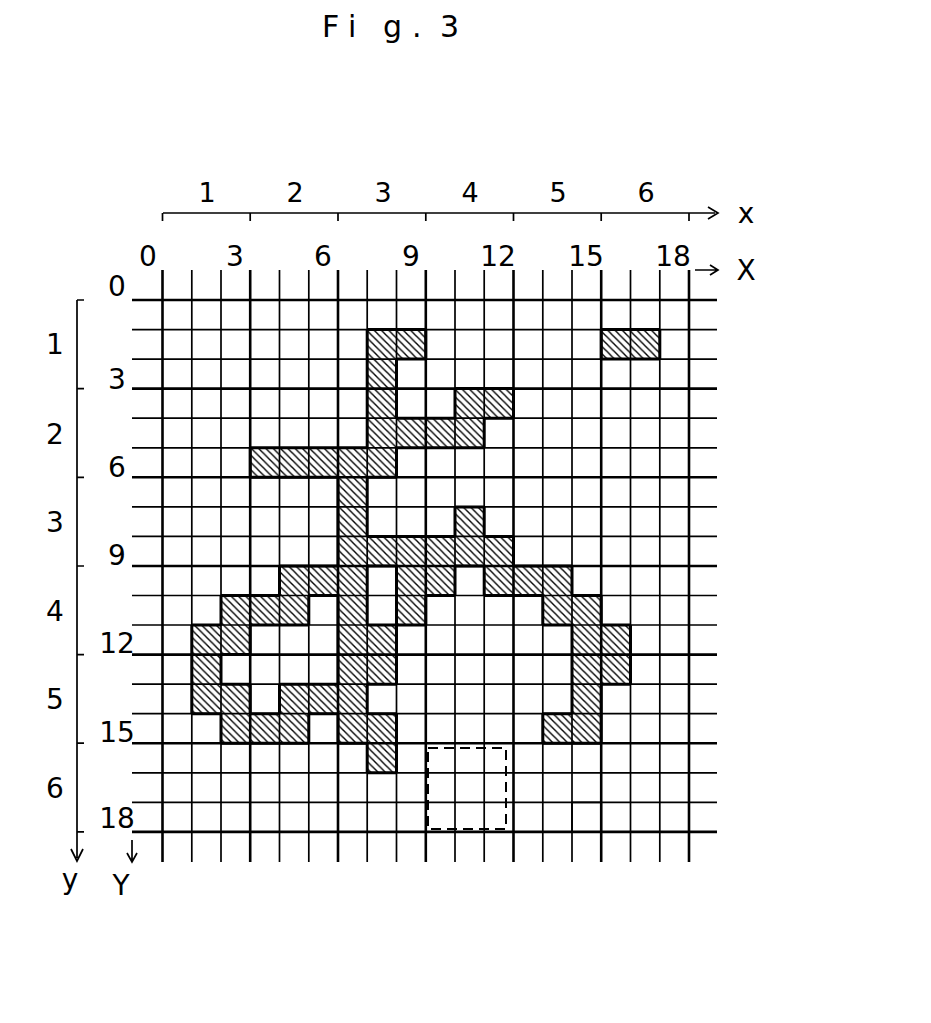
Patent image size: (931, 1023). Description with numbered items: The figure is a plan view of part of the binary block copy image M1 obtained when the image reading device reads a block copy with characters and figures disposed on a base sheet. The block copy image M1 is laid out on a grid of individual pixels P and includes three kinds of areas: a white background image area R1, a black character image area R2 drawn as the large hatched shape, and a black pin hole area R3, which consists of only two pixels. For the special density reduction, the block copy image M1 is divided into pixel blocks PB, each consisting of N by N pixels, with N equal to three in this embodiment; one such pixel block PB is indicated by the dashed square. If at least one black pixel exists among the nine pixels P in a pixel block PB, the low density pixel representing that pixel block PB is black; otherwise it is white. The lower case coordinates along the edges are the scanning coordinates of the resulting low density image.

The block copy image M1 is at (769, 488).
The white background image area R1 is at (672, 790).
The black character image area R2 is at (626, 637).
The black pin hole area R3 is at (654, 344).
The pixel P is at (583, 818).
The pixel block PB is at (472, 832).